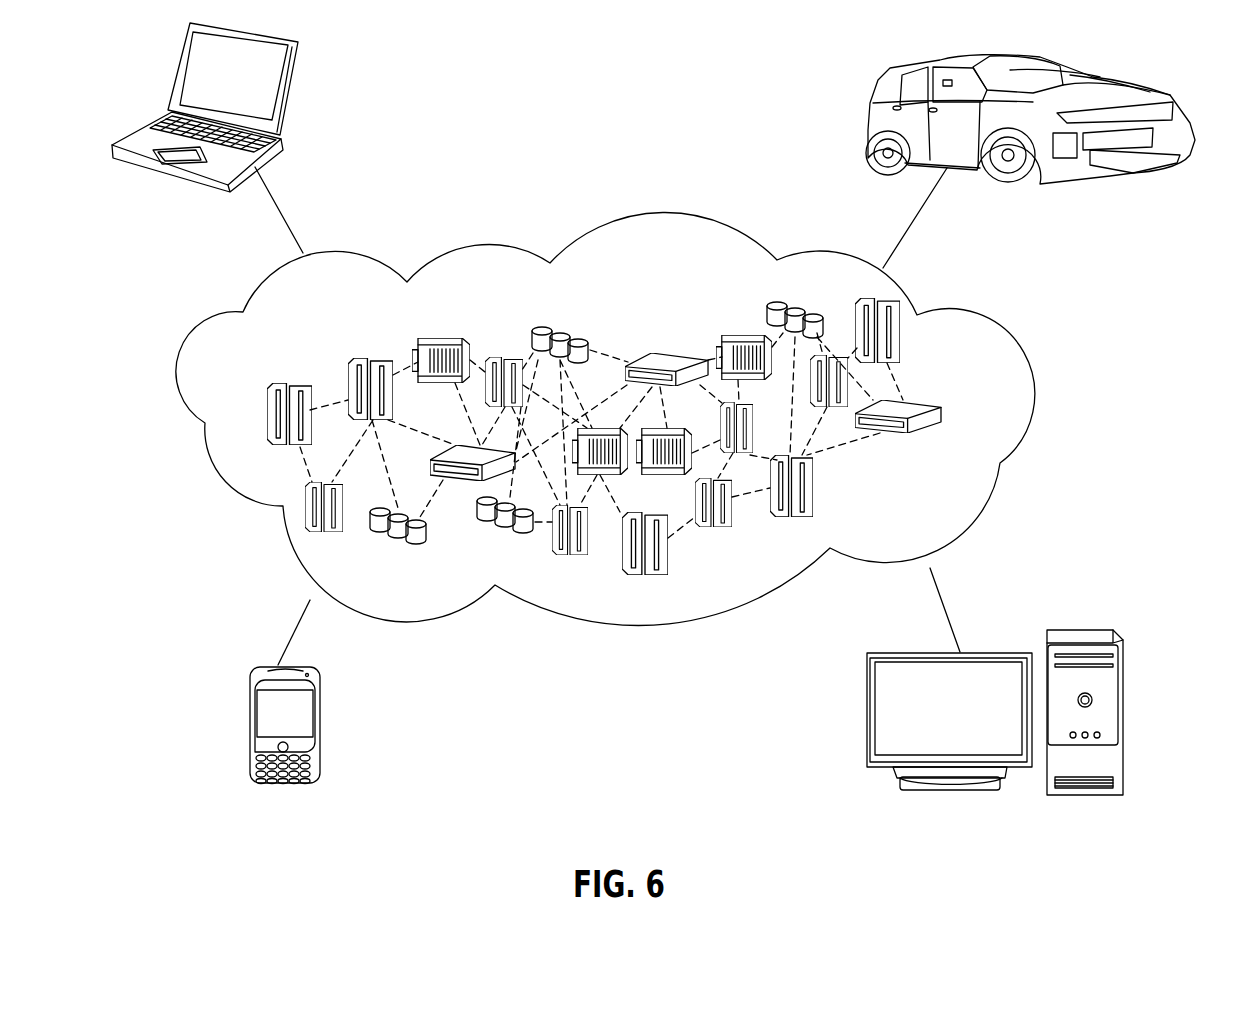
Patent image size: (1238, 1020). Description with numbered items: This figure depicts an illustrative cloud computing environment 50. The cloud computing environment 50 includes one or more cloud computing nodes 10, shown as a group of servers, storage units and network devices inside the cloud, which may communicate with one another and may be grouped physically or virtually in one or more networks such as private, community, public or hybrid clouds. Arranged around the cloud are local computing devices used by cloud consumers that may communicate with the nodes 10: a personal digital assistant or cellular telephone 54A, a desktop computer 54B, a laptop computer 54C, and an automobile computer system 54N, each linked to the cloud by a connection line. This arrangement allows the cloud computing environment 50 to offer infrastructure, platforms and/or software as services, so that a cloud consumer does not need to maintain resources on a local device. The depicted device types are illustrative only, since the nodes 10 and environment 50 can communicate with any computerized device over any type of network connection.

The cloud computing environment 50 is at (1007, 325).
The cloud computing nodes 10 is at (980, 413).
The personal digital assistant or cellular telephone 54A is at (250, 727).
The desktop computer 54B is at (1087, 630).
The laptop computer 54C is at (292, 92).
The automobile computer system 54N is at (875, 100).